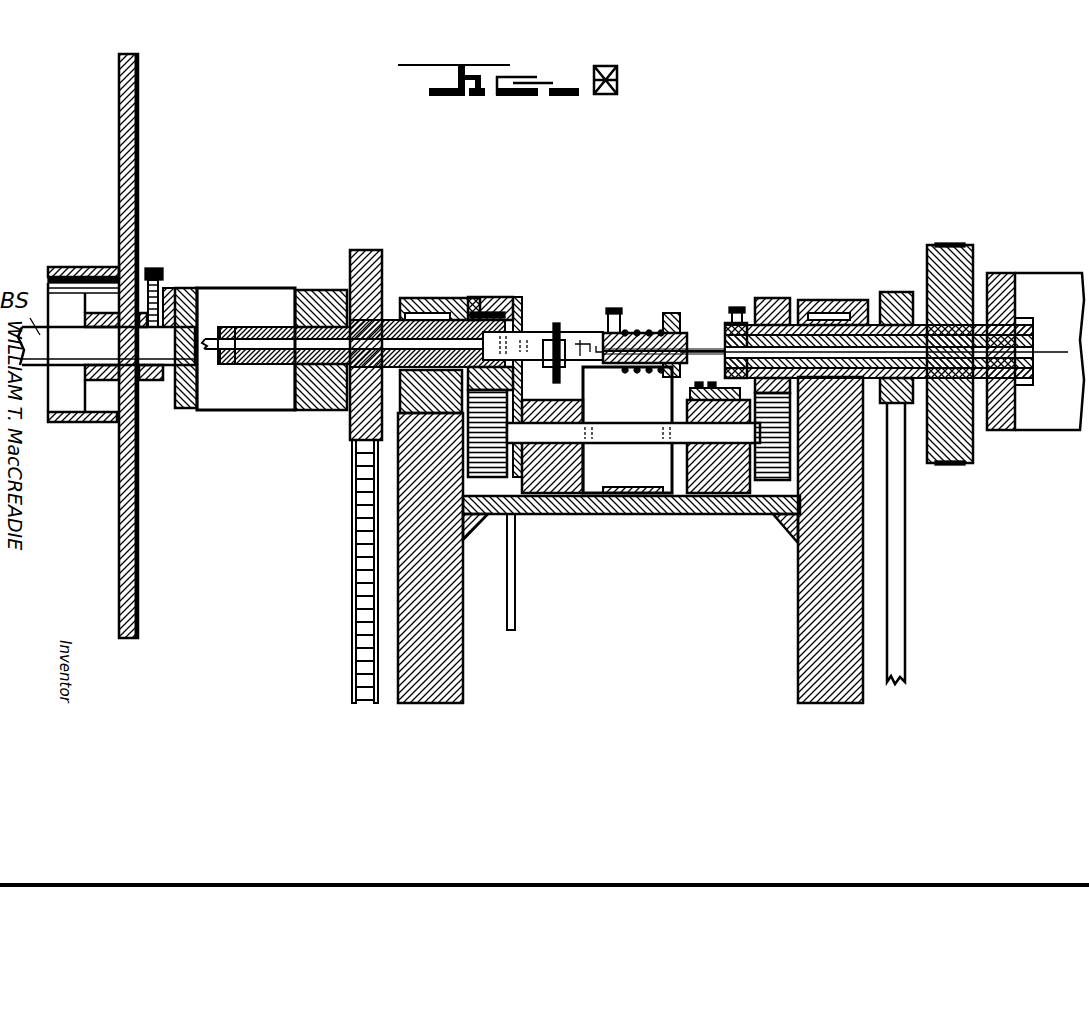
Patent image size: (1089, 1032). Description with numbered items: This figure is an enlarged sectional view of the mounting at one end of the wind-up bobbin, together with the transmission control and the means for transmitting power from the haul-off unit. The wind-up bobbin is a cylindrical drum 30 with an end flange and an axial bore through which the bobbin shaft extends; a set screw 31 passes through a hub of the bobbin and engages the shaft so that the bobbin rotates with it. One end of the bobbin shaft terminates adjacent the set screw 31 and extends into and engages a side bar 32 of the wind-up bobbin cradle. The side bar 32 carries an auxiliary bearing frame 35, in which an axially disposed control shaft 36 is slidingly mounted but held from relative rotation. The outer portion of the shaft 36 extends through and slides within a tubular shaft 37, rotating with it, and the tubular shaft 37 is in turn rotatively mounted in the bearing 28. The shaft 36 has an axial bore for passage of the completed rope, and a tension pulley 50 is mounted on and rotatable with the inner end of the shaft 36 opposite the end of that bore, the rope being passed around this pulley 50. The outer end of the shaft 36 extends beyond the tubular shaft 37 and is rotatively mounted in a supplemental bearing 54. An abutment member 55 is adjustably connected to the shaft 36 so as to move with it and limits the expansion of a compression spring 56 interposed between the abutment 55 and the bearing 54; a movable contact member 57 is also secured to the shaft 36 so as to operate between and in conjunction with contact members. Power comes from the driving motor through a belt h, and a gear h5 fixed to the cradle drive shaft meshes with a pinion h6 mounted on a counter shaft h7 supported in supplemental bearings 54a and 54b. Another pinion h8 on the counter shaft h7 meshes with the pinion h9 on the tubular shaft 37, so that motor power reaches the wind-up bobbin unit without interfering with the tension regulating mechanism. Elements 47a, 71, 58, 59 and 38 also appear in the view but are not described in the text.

The cylindrical drum 30 is at (65, 266).
The set screw 31 is at (162, 268).
The side bar 32 is at (125, 520).
The auxiliary bearing frame 35 is at (315, 377).
The control shaft 36 is at (277, 303).
The tubular shaft 37 is at (388, 310).
The bearing 28 is at (428, 297).
The column 47a is at (383, 310).
The tension pulley 50 is at (207, 357).
The pinion h9 is at (487, 310).
The strip 71 is at (517, 300).
The disc 58 is at (535, 312).
The disc hub 59 is at (552, 322).
The movable contact member 57 is at (567, 323).
The abutment member 55 is at (620, 310).
The compression spring 56 is at (668, 292).
The supplemental bearing 54 is at (681, 318).
The counter shaft h7 is at (625, 447).
The pinion h8 is at (478, 482).
The supplemental bearing 54a is at (562, 488).
The supplemental bearing 54b is at (722, 487).
The gear h5 is at (777, 300).
The pinion h6 is at (773, 482).
The shaft sleeve 38 is at (832, 302).
The belt h is at (900, 578).